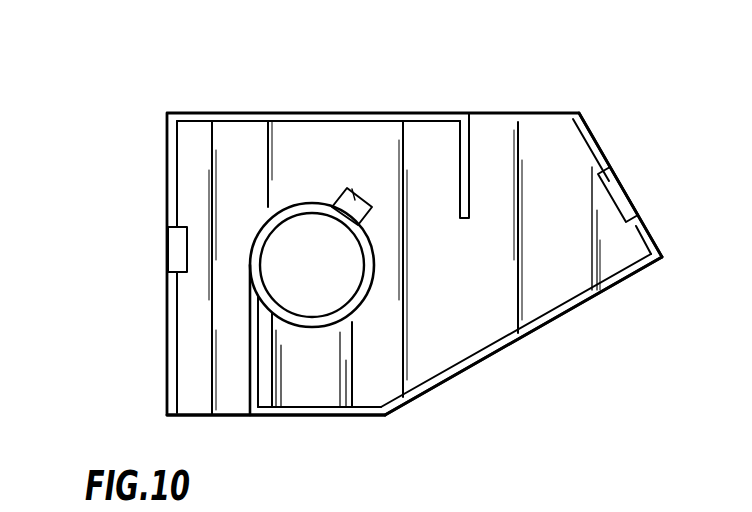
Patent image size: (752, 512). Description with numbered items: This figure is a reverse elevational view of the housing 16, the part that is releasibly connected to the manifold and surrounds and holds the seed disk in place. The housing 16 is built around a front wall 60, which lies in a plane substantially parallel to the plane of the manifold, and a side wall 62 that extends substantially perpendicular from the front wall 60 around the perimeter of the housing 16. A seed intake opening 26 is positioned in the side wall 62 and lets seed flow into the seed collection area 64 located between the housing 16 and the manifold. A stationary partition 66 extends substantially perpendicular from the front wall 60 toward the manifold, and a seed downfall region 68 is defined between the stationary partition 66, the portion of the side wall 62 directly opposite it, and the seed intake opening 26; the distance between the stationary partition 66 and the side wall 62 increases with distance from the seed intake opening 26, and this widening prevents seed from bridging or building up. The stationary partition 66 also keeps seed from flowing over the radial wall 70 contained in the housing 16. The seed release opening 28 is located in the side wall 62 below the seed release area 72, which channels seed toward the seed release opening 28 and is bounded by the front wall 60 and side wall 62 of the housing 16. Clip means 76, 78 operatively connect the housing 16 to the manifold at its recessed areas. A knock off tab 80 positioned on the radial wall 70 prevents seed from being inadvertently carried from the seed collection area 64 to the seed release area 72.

The housing 16 is at (281, 111).
The seed intake opening 26 is at (530, 122).
The seed release opening 28 is at (197, 418).
The front wall 60 is at (468, 290).
The side wall 62 is at (167, 210).
The seed collection area 64 is at (542, 277).
The stationary partition 66 is at (483, 130).
The seed downfall region 68 is at (548, 137).
The radial wall 70 is at (262, 375).
The seed release area 72 is at (195, 378).
The clip means 76 is at (178, 243).
The clip means 78 is at (622, 183).
The knock off tab 80 is at (351, 188).